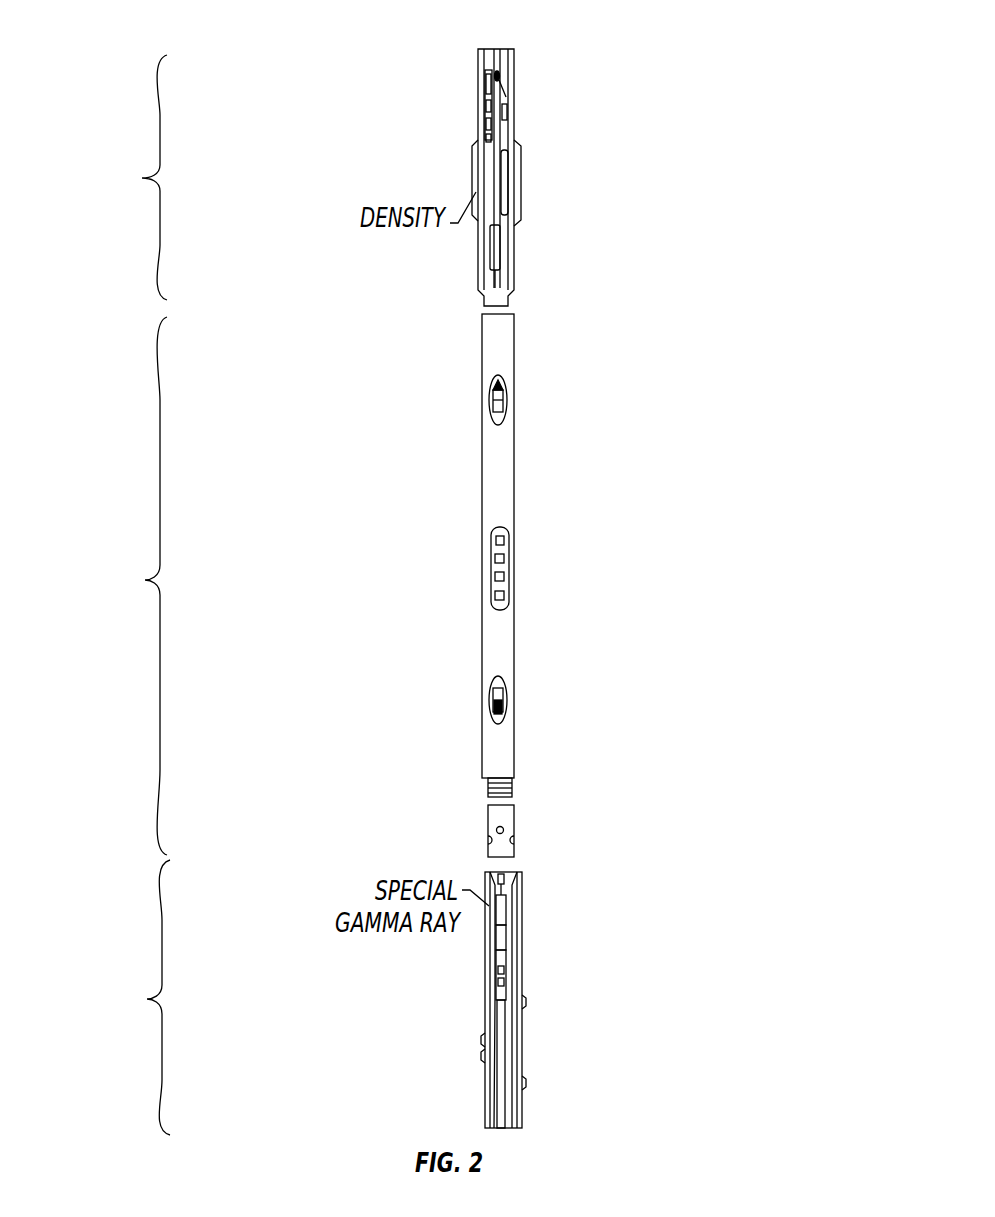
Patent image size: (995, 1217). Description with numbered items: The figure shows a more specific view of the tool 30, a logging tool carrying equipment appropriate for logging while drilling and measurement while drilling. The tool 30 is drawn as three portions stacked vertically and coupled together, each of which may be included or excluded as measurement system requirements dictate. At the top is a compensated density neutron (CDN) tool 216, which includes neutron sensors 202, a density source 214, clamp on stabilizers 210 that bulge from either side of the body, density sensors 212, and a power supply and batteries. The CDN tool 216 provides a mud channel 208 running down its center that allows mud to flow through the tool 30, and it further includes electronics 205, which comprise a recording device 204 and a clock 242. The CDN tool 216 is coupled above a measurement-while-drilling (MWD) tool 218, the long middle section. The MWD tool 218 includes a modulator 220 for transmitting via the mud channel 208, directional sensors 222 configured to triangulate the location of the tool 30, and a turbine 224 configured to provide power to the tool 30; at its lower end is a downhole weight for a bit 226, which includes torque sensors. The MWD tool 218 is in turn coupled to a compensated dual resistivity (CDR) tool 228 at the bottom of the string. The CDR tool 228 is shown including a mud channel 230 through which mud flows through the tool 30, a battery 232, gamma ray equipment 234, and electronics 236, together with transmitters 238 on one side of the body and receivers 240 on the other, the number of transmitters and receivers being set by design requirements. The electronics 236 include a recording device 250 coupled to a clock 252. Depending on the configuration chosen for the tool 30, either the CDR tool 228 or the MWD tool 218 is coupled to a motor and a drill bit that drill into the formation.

The tool 30 is at (108, 76).
The compensated density neutron (CDN) tool 216 is at (437, 176).
The mud channel 208 is at (623, 145).
The neutron sensors 202 is at (348, 68).
The electronics 205 is at (377, 92).
The recording device 204 is at (343, 136).
The clock 242 is at (413, 163).
The density source 214 is at (635, 207).
The clamp on stabilizers 210 is at (648, 182).
The density sensors 212 is at (644, 182).
The measurement-while-drilling (MWD) tool 218 is at (299, 584).
The modulator 220 is at (591, 406).
The directional sensors 222 is at (590, 575).
The turbine 224 is at (571, 706).
The downhole weight for a bit 226 is at (629, 810).
The compensated dual resistivity (CDR) tool 228 is at (307, 997).
The mud channel 230 is at (629, 863).
The battery 232 is at (589, 898).
The gamma ray equipment 234 is at (611, 922).
The electronics 236 is at (619, 962).
The recording device 250 is at (652, 969).
The clock 252 is at (584, 997).
The transmitters 238 is at (638, 1042).
The receivers 240 is at (397, 1061).